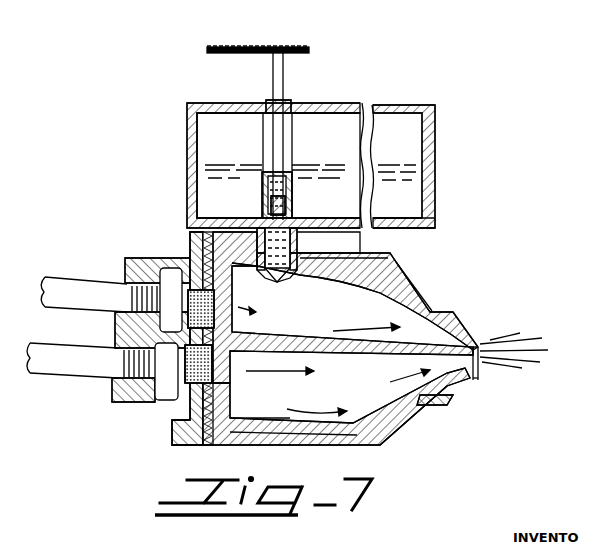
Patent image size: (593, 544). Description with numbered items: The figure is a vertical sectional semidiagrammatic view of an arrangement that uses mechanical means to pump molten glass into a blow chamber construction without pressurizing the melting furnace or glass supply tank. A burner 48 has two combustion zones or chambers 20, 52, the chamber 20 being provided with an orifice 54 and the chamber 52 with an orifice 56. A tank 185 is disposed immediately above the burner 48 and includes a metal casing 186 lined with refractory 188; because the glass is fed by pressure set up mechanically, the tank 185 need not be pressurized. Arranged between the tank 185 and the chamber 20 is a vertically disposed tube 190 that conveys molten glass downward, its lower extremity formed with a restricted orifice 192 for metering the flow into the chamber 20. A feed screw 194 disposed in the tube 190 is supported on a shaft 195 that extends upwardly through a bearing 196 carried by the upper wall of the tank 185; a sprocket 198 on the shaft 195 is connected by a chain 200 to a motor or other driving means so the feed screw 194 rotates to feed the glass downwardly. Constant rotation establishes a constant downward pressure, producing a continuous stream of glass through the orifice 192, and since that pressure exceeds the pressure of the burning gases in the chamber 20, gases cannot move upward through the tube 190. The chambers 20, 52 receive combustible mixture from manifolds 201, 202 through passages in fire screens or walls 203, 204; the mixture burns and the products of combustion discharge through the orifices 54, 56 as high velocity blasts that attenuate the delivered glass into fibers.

The tank 185 is at (437, 155).
The metal casing 186 is at (436, 216).
The refractory 188 is at (204, 139).
The tube 190 is at (268, 188).
The restricted orifice 192 is at (279, 283).
The feed screw 194 is at (266, 204).
The shaft 195 is at (287, 142).
The bearing 196 is at (286, 100).
The sprocket 198 is at (292, 47).
The chain 200 is at (246, 47).
The manifold 201 is at (175, 285).
The manifold 202 is at (166, 392).
The fire screen 203 is at (216, 305).
The fire screen 204 is at (214, 372).
The combustion chamber 20 is at (298, 292).
The combustion chamber 52 is at (294, 395).
The orifice 54 is at (479, 352).
The orifice 56 is at (500, 382).
The burner 48 is at (407, 413).